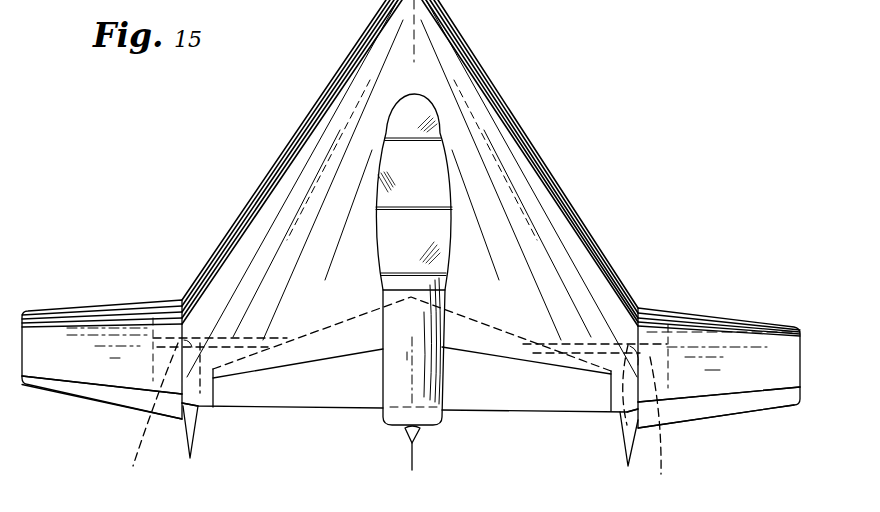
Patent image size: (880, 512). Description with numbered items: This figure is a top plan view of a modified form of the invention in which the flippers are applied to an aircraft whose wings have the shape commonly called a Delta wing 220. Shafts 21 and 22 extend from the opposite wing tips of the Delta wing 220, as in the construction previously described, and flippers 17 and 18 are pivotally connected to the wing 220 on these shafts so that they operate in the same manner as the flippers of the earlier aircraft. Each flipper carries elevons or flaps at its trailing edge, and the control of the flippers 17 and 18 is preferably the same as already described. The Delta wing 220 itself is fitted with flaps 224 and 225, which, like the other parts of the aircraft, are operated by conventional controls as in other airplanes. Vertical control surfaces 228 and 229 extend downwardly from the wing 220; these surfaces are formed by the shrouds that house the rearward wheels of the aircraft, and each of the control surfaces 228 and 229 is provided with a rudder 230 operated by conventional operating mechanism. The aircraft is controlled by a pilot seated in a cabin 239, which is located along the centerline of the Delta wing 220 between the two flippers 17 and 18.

The flipper 17 is at (743, 312).
The flipper 18 is at (117, 300).
The shaft 21 is at (659, 421).
The shaft 22 is at (140, 412).
The Delta wing 220 is at (537, 126).
The flap 224 is at (511, 408).
The flap 225 is at (287, 402).
The vertical control surface 228 is at (620, 420).
The vertical control surface 229 is at (199, 408).
The rudder 230 is at (200, 430).
The cabin 239 is at (438, 192).